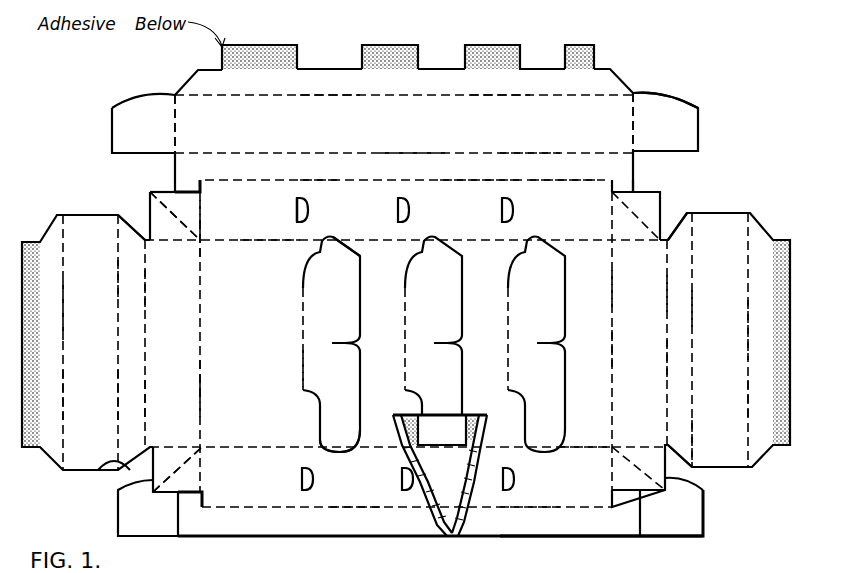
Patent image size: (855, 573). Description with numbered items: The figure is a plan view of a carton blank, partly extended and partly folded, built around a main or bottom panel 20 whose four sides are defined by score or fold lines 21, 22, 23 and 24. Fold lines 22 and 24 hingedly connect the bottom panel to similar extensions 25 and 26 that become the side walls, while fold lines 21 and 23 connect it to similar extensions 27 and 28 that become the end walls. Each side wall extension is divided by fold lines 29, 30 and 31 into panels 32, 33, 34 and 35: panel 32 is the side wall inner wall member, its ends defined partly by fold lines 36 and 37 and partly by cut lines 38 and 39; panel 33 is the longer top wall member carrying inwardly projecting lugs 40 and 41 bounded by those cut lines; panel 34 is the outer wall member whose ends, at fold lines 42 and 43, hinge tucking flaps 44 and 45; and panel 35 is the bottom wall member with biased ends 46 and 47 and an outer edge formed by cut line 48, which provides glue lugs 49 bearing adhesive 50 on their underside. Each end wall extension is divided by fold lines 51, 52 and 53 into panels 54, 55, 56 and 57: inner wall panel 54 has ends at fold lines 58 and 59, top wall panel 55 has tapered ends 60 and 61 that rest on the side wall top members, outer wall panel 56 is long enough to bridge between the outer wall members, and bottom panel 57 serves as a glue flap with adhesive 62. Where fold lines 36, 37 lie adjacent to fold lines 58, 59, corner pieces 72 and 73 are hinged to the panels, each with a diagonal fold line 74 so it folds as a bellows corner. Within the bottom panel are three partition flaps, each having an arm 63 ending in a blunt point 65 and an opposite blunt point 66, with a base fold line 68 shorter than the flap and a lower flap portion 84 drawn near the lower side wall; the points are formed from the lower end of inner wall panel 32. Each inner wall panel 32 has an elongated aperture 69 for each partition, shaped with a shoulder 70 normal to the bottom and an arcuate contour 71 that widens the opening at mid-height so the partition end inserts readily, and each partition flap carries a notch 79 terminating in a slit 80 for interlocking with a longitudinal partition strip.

The main or bottom panel 20 is at (265, 321).
The score or fold line 21 is at (203, 377).
The score or fold line 22 is at (258, 242).
The score or fold line 23 is at (611, 296).
The score or fold line 24 is at (582, 446).
The extension 25 is at (705, 58).
The extension 26 is at (734, 542).
The extension 27 is at (62, 203).
The extension 28 is at (772, 208).
The score or fold line 29 is at (496, 182).
The score or fold line 30 is at (530, 154).
The score or fold line 31 is at (498, 95).
The panel 32 is at (331, 188).
The panel 33 is at (418, 160).
The panel 34 is at (336, 106).
The panel 35 is at (538, 75).
The score or fold line 36 is at (204, 224).
The score or fold line 37 is at (612, 232).
The cut line 38 is at (203, 194).
The cut line 39 is at (611, 186).
The inwardly projecting lug 40 is at (199, 184).
The inwardly projecting lug 41 is at (615, 180).
The score or fold line 42 is at (177, 122).
The score or fold line 43 is at (632, 134).
The tucking flap 44 is at (156, 102).
The tucking flap 45 is at (699, 134).
The biased or inclined end 46 is at (190, 82).
The biased or inclined end 47 is at (628, 82).
The cut line 48 is at (416, 70).
The glue lug or flap 49 is at (295, 44).
The adhesive 50 is at (376, 54).
The score or fold line 51 is at (147, 292).
The score or fold line 52 is at (119, 292).
The score or fold line 53 is at (65, 312).
The panel 54 is at (200, 402).
The panel 55 is at (147, 399).
The panel 56 is at (120, 394).
The panel 57 is at (64, 393).
The score or fold line 58 is at (200, 246).
The score or fold line 59 is at (179, 447).
The biased or tapered end 60 is at (131, 226).
The biased or tapered end 61 is at (106, 468).
The adhesive 62 is at (31, 241).
The arm 63 is at (355, 258).
The blunt point or end 65 is at (336, 238).
The blunt point or end 66 is at (338, 455).
The score or fold line 68 is at (304, 376).
The elongated aperture 69 is at (296, 203).
The back face or shoulder 70 is at (296, 213).
The arcuate contour 71 is at (309, 205).
The corner piece 72 is at (163, 194).
The corner piece 73 is at (204, 479).
The diagonal fold or score line 74 is at (178, 230).
The notch 79 is at (456, 346).
The slit or cut 80 is at (548, 344).
The cutout bottom 84 is at (352, 434).